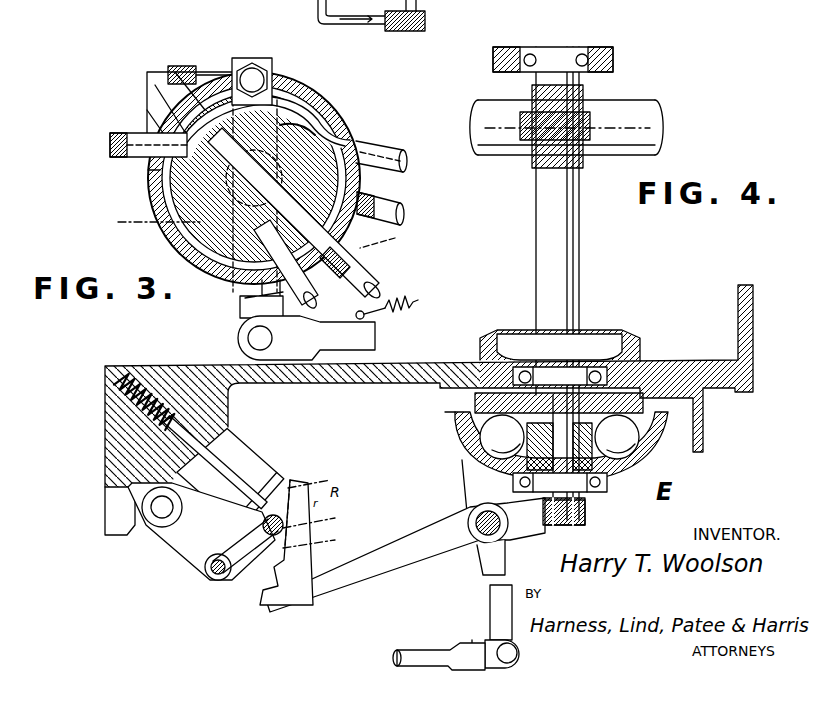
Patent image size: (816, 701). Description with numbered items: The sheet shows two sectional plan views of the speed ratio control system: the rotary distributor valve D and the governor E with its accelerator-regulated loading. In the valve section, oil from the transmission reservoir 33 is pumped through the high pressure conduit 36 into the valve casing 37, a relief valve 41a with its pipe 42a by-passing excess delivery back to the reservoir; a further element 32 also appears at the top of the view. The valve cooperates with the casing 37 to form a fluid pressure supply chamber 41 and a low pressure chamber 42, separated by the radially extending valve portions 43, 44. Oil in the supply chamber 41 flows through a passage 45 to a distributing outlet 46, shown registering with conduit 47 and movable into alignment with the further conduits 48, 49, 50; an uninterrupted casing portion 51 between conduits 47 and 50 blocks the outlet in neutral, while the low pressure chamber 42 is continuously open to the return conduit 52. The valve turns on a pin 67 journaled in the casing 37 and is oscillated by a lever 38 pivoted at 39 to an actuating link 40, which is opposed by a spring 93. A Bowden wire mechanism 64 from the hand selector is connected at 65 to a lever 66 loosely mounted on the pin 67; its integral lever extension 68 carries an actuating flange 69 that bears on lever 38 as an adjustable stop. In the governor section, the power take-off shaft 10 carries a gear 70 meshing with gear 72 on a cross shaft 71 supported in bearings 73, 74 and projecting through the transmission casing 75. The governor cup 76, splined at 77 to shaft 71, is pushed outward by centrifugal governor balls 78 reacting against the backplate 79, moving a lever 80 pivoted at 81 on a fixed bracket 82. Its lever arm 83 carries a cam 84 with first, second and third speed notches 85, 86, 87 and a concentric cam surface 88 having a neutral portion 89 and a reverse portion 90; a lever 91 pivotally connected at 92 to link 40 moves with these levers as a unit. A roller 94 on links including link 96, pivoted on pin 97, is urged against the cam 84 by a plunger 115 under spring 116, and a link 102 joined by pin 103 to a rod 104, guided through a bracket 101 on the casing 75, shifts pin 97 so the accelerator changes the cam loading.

In FIG. 4, the power take-off shaft 10 is at (640, 120).
In FIG. 3, the conduit 32 is at (252, 9).
In FIG. 3, the transmission reservoir 33 is at (535, 9).
In FIG. 3, the high pressure conduit 36 is at (110, 141).
In FIG. 3, the valve casing 37 is at (148, 173).
In FIG. 3, the lever 38 is at (190, 258).
In FIG. 3, the pivot 39 is at (250, 338).
In FIG. 3, the actuating link 40 is at (385, 322).
In FIG. 4, the actuating link 40 is at (438, 627).
In FIG. 3, the fluid pressure supply chamber 41 is at (160, 203).
In FIG. 3, the relief valve 41a is at (388, 31).
In FIG. 3, the low pressure chamber 42 is at (330, 135).
In FIG. 3, the pipe 42a is at (462, 9).
In FIG. 3, the radially extending valve portion 43 is at (178, 238).
In FIG. 3, the radially extending valve portion 44 is at (240, 62).
In FIG. 3, the passage 45 is at (165, 120).
In FIG. 3, the distributing outlet 46 is at (345, 255).
In FIG. 3, the conduit 47 is at (355, 282).
In FIG. 3, the conduit 48 is at (315, 303).
In FIG. 3, the conduit 49 is at (240, 300).
In FIG. 3, the conduit 50 is at (380, 200).
In FIG. 3, the uninterrupted casing portion 51 is at (375, 240).
In FIG. 3, the return conduit 52 is at (385, 145).
In FIG. 3, the Bowden wire mechanism 64 is at (182, 66).
In FIG. 3, the connection 65 is at (256, 78).
In FIG. 3, the lever 66 is at (290, 96).
In FIG. 3, the pin 67 is at (300, 122).
In FIG. 3, the lever extension 68 is at (142, 227).
In FIG. 3, the actuating flange 69 is at (400, 250).
In FIG. 4, the gear 70 is at (585, 150).
In FIG. 4, the cross shaft 71 is at (580, 218).
In FIG. 4, the gear 72 is at (580, 112).
In FIG. 4, the bearing 73 is at (580, 52).
In FIG. 4, the bearing 74 is at (595, 367).
In FIG. 4, the transmission casing 75 is at (670, 362).
In FIG. 4, the governor cup 76 is at (640, 452).
In FIG. 4, the spline 77 is at (590, 492).
In FIG. 4, the governor balls 78 is at (480, 438).
In FIG. 4, the reaction backplate 79 is at (475, 402).
In FIG. 4, the lever 80 is at (530, 530).
In FIG. 4, the pivot 81 is at (474, 510).
In FIG. 4, the fixed bracket 82 is at (462, 470).
In FIG. 4, the lever arm 83 is at (395, 548).
In FIG. 4, the cam 84 is at (308, 603).
In FIG. 4, the first speed notch 85 is at (320, 532).
In FIG. 4, the second speed notch 86 is at (314, 560).
In FIG. 4, the third speed notch 87 is at (272, 608).
In FIG. 4, the cam surface 88 is at (318, 474).
In FIG. 4, the neutral portion 89 is at (280, 505).
In FIG. 4, the reverse portion 90 is at (285, 510).
In FIG. 4, the lever 91 is at (478, 566).
In FIG. 4, the pivot 92 is at (498, 645).
In FIG. 3, the spring 93 is at (430, 298).
In FIG. 4, the roller 94 is at (285, 522).
In FIG. 4, the link 96 is at (245, 590).
In FIG. 4, the pivot pin 97 is at (212, 578).
In FIG. 4, the bracket 101 is at (235, 435).
In FIG. 4, the link 102 is at (190, 558).
In FIG. 4, the pin 103 is at (160, 518).
In FIG. 4, the rod 104 is at (105, 514).
In FIG. 4, the plunger 115 is at (240, 456).
In FIG. 4, the spring 116 is at (165, 372).